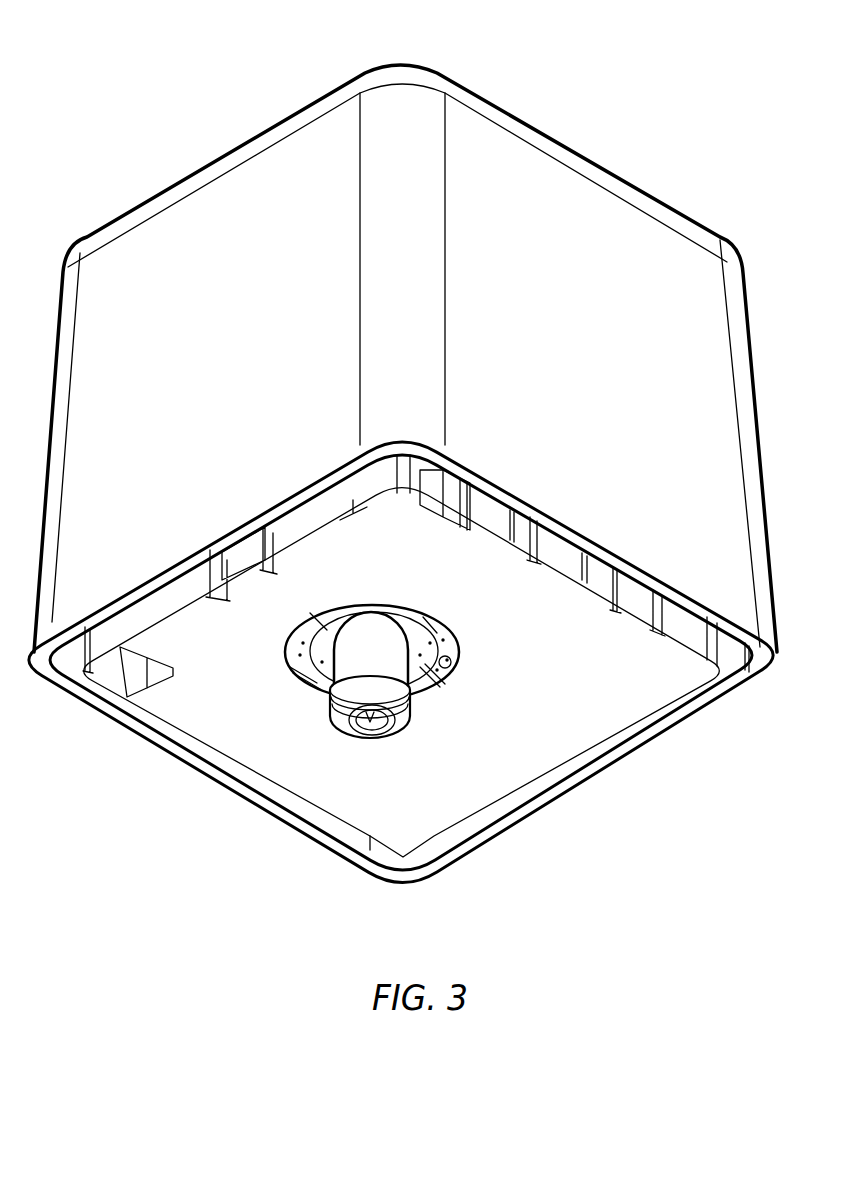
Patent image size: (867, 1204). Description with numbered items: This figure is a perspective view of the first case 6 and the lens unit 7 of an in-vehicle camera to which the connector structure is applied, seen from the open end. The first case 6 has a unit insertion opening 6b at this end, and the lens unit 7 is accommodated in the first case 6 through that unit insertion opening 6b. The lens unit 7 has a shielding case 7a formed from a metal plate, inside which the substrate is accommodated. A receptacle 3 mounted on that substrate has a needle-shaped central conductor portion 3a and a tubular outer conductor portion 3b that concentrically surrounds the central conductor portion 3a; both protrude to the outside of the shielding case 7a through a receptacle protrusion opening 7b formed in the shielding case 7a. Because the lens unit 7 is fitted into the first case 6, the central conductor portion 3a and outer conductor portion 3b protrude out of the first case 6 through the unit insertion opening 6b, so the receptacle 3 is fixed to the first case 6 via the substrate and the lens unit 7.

The receptacle 3 is at (368, 707).
The central conductor portion 3a is at (384, 724).
The outer conductor portion 3b is at (404, 698).
The first case 6 is at (403, 474).
The unit insertion opening 6b is at (311, 817).
The lens unit 7 is at (401, 668).
The shielding case 7a is at (510, 778).
The receptacle protrusion opening 7b is at (452, 652).